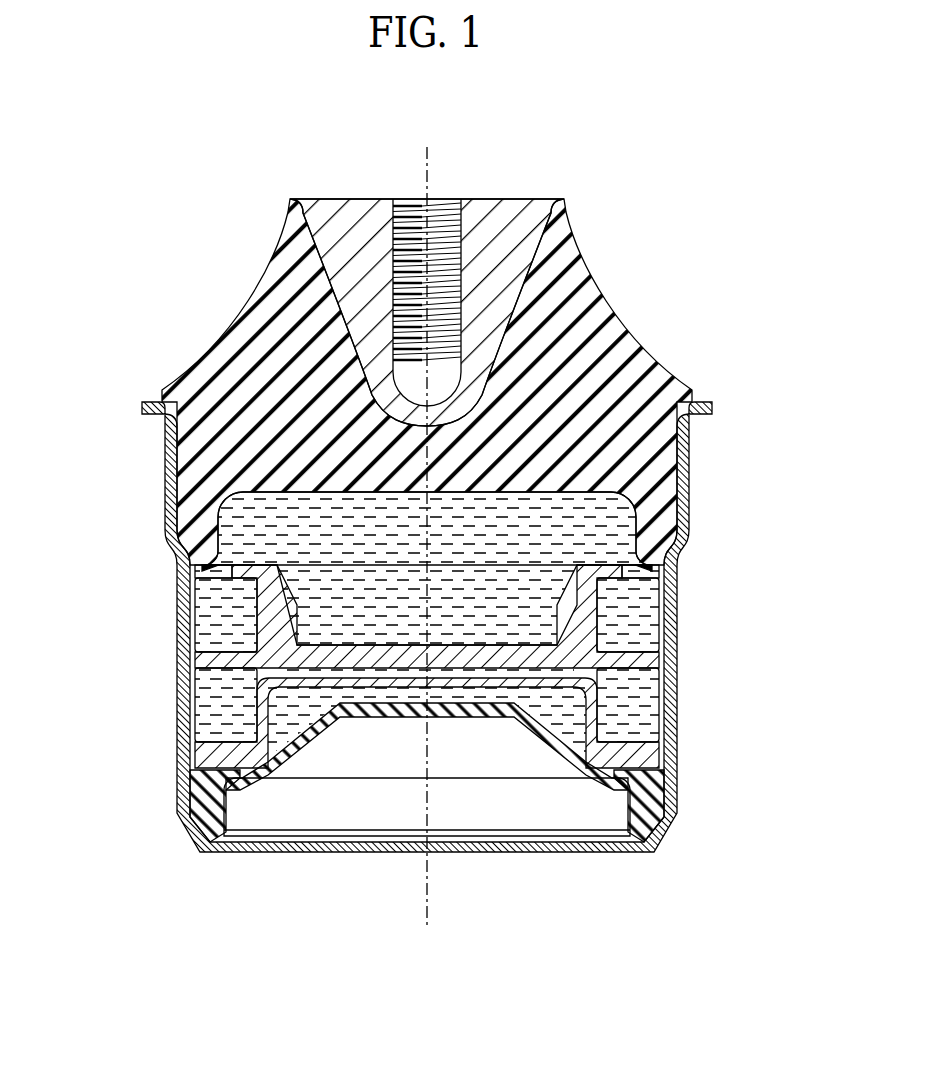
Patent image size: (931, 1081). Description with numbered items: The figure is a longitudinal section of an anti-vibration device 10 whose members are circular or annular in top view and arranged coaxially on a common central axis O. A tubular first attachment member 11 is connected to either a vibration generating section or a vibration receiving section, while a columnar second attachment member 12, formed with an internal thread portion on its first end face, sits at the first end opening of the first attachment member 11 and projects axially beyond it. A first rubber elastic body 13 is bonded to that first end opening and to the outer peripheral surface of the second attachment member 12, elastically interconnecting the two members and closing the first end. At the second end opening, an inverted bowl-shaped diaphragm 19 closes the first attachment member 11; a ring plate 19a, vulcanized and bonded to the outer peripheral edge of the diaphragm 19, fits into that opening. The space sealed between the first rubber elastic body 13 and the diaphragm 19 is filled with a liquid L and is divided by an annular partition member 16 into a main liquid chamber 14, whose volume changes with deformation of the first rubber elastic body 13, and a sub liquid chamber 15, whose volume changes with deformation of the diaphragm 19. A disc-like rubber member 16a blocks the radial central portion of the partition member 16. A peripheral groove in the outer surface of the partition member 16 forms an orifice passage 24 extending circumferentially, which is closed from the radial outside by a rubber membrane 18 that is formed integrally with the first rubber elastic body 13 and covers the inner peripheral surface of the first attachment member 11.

The anti-vibration device 10 is at (460, 482).
The first attachment member 11 is at (677, 662).
The second attachment member 12 is at (508, 210).
The first rubber elastic body 13 is at (615, 327).
The main liquid chamber 14 is at (478, 568).
The sub liquid chamber 15 is at (300, 716).
The partition member 16 is at (643, 568).
The disc-like rubber member 16a is at (372, 643).
The rubber membrane 18 is at (197, 713).
The diaphragm 19 is at (367, 712).
The ring plate 19a is at (203, 792).
The orifice passage 24 is at (640, 708).
The liquid L is at (610, 542).
The central axis O is at (420, 162).